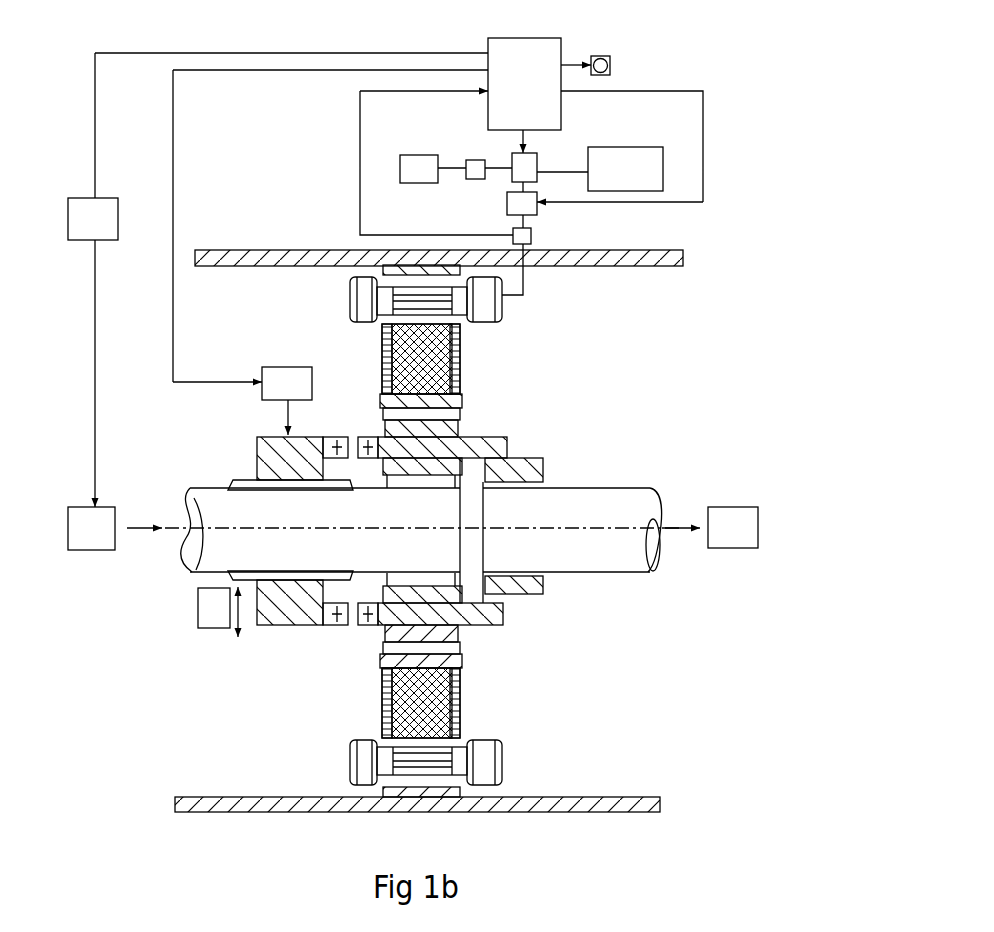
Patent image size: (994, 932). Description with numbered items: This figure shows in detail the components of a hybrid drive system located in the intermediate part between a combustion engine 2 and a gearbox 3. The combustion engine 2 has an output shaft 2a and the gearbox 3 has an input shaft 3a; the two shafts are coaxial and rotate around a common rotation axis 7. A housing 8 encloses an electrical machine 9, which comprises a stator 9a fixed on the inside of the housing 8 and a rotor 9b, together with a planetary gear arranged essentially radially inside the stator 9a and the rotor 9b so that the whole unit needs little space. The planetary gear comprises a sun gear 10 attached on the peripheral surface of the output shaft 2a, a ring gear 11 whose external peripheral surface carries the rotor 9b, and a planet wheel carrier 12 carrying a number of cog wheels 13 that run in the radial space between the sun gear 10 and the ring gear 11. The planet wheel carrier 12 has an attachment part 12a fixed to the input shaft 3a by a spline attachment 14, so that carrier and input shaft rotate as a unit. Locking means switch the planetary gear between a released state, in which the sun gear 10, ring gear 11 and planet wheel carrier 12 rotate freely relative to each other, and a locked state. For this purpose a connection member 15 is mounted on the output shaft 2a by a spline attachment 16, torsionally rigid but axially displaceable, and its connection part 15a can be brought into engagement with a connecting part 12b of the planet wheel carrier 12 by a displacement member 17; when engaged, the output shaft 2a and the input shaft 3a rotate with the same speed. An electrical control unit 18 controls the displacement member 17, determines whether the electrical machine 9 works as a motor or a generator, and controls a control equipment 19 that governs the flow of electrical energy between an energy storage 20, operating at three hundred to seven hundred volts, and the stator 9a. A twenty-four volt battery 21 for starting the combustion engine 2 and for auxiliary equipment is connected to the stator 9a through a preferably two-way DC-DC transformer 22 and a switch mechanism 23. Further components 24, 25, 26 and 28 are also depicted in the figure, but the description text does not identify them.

The combustion engine 2 is at (93, 534).
The output shaft 2a is at (198, 541).
The gearbox 3 is at (735, 534).
The input shaft 3a is at (605, 554).
The rotation axis 7 is at (608, 525).
The housing 8 is at (270, 797).
The electrical machine 9 is at (328, 303).
The stator 9a is at (483, 307).
The rotor 9b is at (380, 364).
The sun gear 10 is at (407, 482).
The ring gear 11 is at (443, 398).
The planet wheel carrier 12 is at (492, 457).
The attachment part 12a is at (517, 586).
The connecting part 12b is at (357, 623).
The cog wheels 13 is at (435, 428).
The spline attachment 14 is at (543, 584).
The connection member 15 is at (273, 467).
The connection part 15a is at (337, 619).
The spline attachment 16 is at (265, 485).
The displacement member 17 is at (288, 374).
The electrical control unit 18 is at (511, 93).
The control equipment 19 is at (524, 200).
The energy storage 20 is at (618, 160).
The 24 volt battery 21 is at (418, 166).
The DC-DC transformer 22 is at (474, 161).
The switch mechanism 23 is at (522, 168).
The connector 24 is at (531, 236).
The indicator 25 is at (600, 78).
The speed sensor 26 is at (97, 213).
The displacement sensor 28 is at (207, 624).